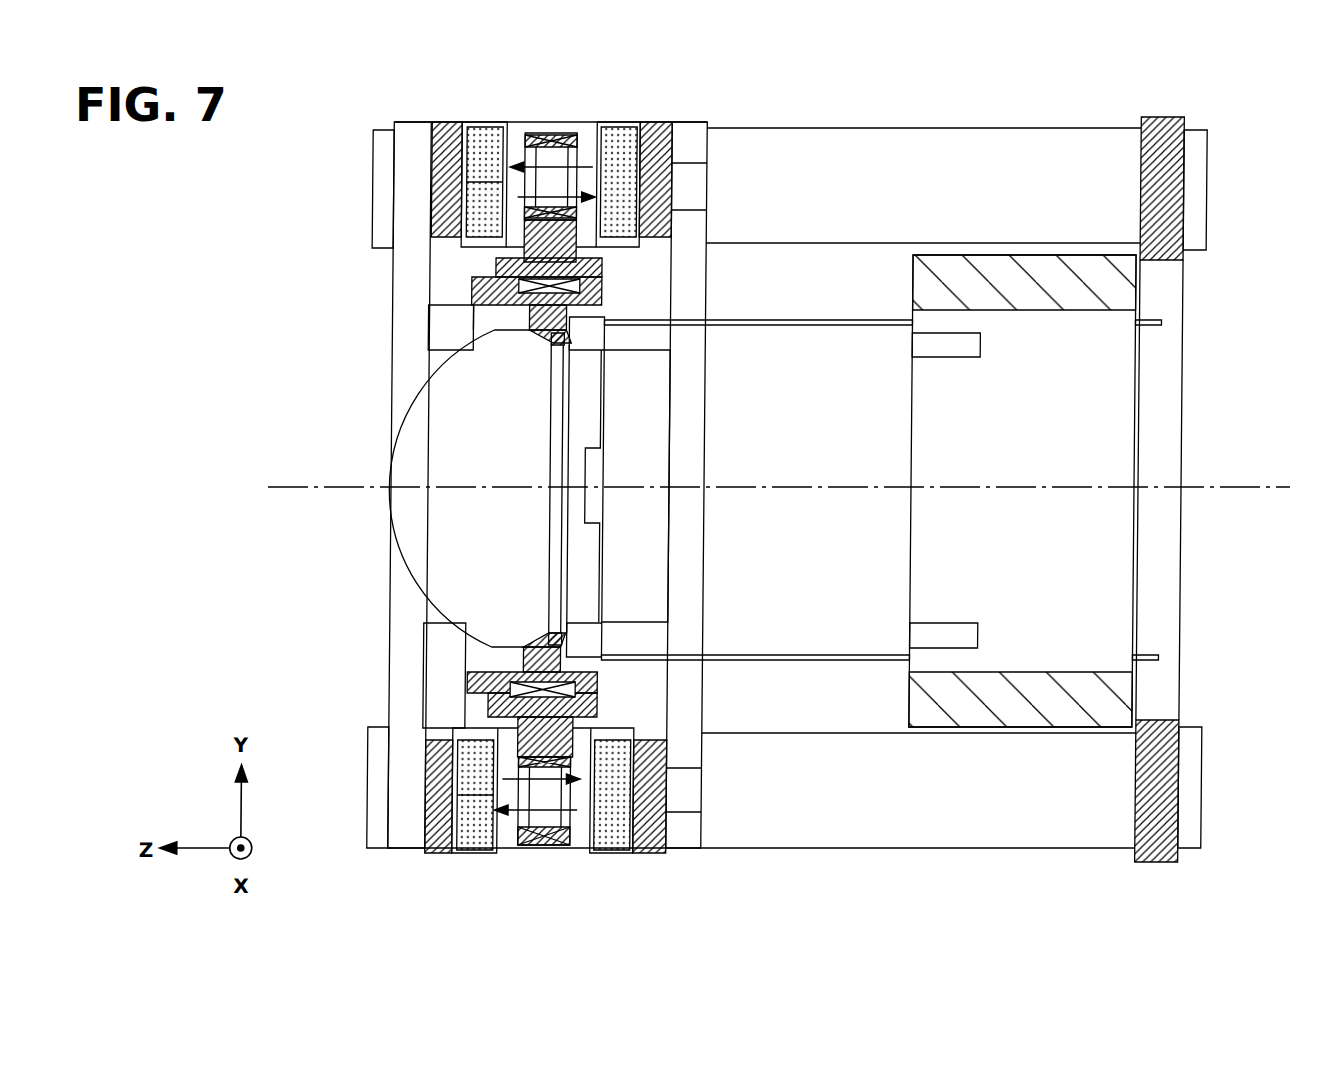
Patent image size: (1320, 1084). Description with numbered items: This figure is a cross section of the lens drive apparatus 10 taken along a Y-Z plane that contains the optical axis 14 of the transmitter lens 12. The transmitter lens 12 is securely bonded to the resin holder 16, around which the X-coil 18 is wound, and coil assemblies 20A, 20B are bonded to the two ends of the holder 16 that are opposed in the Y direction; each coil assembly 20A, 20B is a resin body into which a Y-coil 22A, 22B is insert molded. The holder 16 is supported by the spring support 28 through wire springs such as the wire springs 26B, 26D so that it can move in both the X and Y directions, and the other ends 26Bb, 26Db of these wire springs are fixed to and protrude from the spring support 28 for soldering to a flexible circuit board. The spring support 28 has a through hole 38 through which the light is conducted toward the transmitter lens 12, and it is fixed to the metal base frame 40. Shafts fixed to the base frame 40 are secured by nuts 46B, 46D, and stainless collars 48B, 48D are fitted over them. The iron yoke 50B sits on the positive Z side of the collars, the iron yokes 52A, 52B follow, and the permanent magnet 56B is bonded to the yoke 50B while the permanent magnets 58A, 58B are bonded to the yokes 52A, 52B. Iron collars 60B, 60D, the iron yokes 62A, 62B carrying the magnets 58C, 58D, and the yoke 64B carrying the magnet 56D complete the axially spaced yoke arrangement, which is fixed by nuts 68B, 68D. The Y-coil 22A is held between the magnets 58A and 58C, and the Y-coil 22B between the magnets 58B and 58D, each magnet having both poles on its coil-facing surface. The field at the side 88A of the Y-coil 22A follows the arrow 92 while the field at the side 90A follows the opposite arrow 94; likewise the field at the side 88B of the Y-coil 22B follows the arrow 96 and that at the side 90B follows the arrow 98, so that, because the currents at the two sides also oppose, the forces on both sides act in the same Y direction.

The lens drive apparatus 10 is at (278, 552).
The transmitter lens 12 is at (437, 408).
The optical axis 14 is at (292, 480).
The holder 16 is at (467, 680).
The X-coil 18 is at (472, 312).
The coil assembly 20A is at (492, 712).
The coil assembly 20B is at (498, 268).
The Y-coil 22A is at (550, 848).
The Y-coil 22B is at (578, 135).
The wire spring 26B is at (828, 661).
The other end of wire spring 26Bb is at (1162, 658).
The wire spring 26D is at (838, 319).
The other end of wire spring 26Db is at (1162, 322).
The spring support 28 is at (966, 722).
The through hole 38 is at (1130, 391).
The base frame 40 is at (1138, 167).
The nut 46B is at (1192, 850).
The nut 46D is at (1206, 155).
The collar 48B is at (1008, 848).
The collar 48D is at (1015, 138).
The yoke 50B is at (706, 277).
The yoke 52A is at (652, 854).
The yoke 52B is at (672, 150).
The permanent magnet 56B is at (660, 436).
The permanent magnet 56D is at (437, 613).
The permanent magnet 58A is at (622, 790).
The permanent magnet 58B is at (625, 184).
The permanent magnet 58C is at (483, 854).
The permanent magnet 58D is at (475, 184).
The collar 60B is at (630, 727).
The collar 60D is at (630, 250).
The yoke 62A is at (437, 852).
The yoke 62B is at (446, 127).
The yoke 64B is at (396, 852).
The nut 68B is at (368, 838).
The nut 68D is at (370, 148).
The side of Y-coil 88A is at (523, 848).
The side of Y-coil 88B is at (543, 135).
The side of Y-coil 90A is at (478, 776).
The side of Y-coil 90B is at (478, 215).
The arrow 92 is at (580, 852).
The arrow 94 is at (455, 804).
The arrow 96 is at (600, 165).
The arrow 98 is at (500, 160).